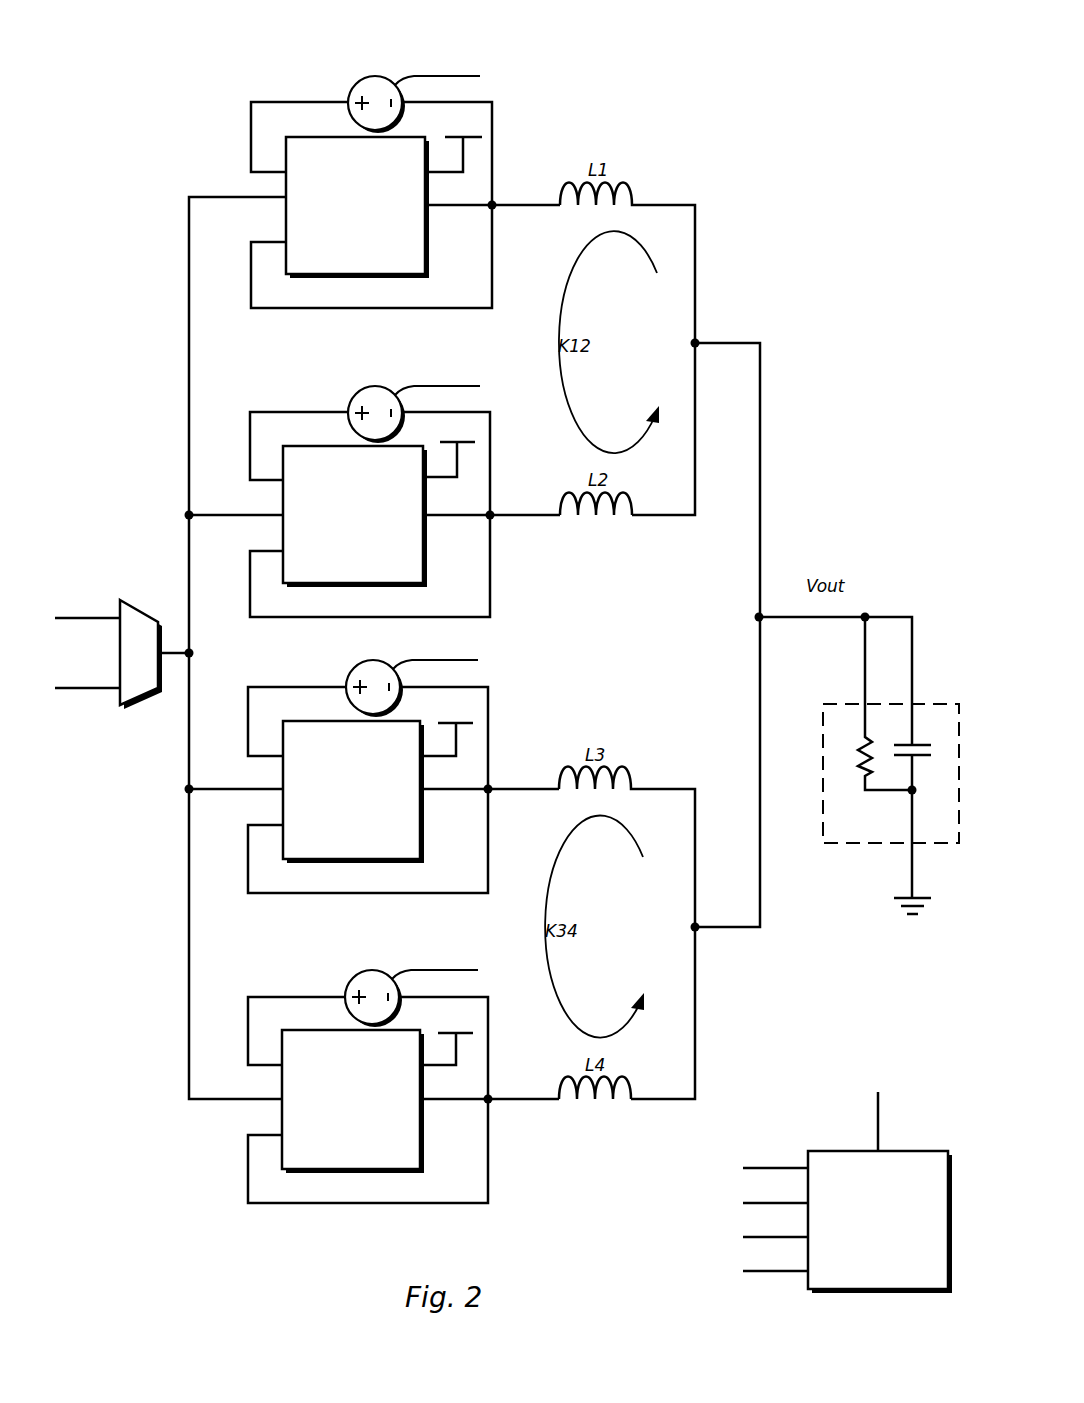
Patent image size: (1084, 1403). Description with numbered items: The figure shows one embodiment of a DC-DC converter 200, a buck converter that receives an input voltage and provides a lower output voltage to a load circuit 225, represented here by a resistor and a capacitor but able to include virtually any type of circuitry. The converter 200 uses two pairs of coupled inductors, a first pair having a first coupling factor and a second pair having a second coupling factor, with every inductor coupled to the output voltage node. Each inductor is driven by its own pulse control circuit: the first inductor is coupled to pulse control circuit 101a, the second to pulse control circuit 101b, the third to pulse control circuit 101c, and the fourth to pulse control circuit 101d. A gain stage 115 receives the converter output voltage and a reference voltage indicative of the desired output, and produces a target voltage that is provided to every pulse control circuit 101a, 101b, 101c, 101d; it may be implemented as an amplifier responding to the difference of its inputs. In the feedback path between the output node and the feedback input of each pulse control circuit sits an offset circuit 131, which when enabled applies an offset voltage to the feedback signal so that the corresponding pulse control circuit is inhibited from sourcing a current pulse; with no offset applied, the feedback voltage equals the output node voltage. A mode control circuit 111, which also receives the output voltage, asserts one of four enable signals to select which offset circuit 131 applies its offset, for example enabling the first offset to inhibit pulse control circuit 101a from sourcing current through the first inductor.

The DC-DC converter 200 is at (641, 89).
The gain stage 115 is at (138, 600).
The offset circuit 131 is at (351, 91).
The pulse control circuit 101a is at (339, 236).
The pulse control circuit 101b is at (337, 545).
The pulse control circuit 101c is at (335, 820).
The pulse control circuit 101d is at (335, 1129).
The load circuit 225 is at (908, 831).
The mode control circuit 111 is at (866, 1248).